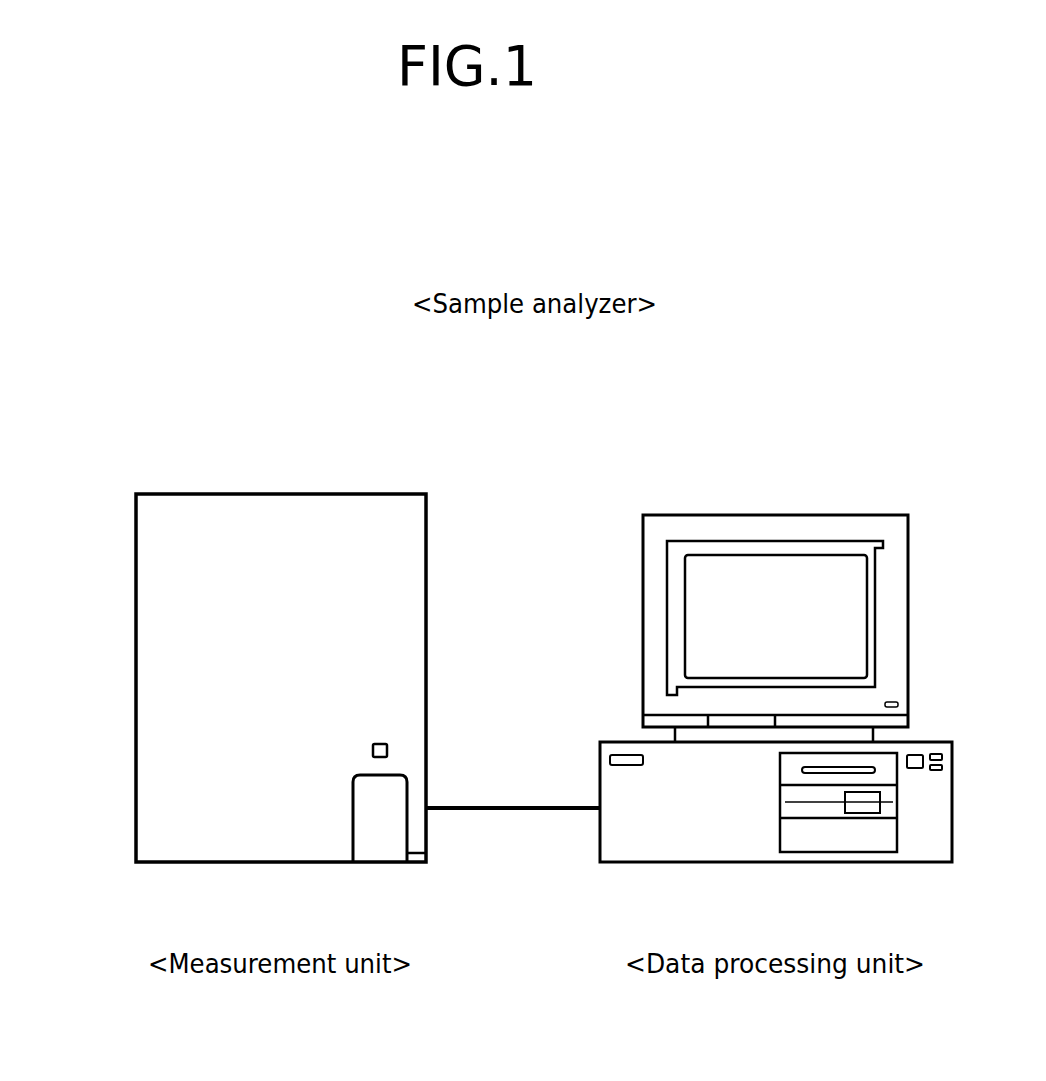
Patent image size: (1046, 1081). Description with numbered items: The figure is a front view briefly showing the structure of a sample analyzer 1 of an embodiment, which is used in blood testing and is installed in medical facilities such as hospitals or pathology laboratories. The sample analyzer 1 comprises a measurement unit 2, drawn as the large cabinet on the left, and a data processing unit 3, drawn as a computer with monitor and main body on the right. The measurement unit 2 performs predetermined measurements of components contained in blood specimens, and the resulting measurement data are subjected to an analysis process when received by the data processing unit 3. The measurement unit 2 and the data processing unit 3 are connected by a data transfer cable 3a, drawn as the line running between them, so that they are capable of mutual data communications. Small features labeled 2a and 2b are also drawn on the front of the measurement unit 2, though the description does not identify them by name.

The sample analyzer 1 is at (650, 442).
The measurement unit 2 is at (136, 640).
The tube / sample supply part 2a is at (427, 852).
The start switch / indicator 2b is at (390, 750).
The data processing unit 3 is at (822, 513).
The data transfer cable 3a is at (515, 812).